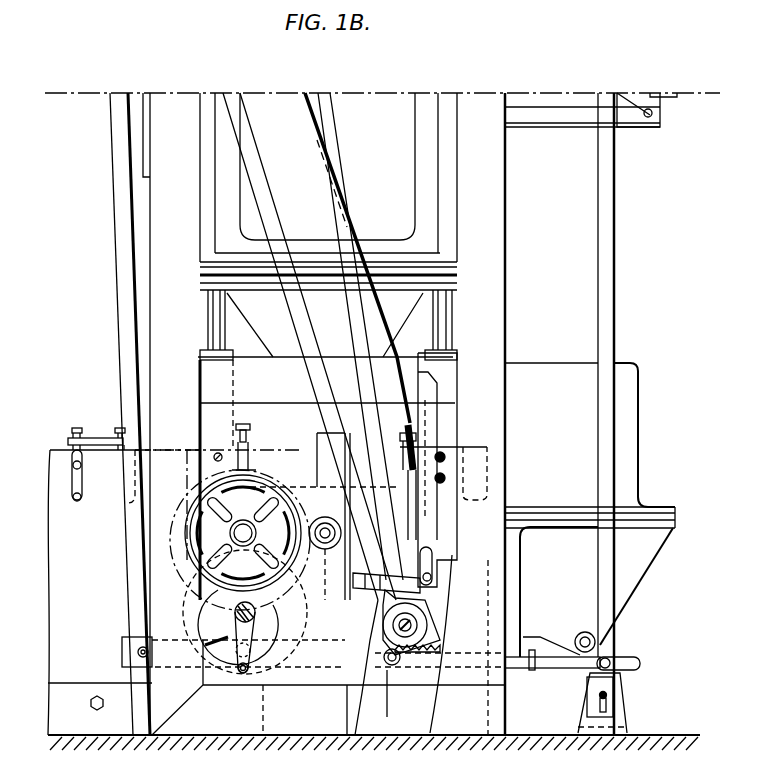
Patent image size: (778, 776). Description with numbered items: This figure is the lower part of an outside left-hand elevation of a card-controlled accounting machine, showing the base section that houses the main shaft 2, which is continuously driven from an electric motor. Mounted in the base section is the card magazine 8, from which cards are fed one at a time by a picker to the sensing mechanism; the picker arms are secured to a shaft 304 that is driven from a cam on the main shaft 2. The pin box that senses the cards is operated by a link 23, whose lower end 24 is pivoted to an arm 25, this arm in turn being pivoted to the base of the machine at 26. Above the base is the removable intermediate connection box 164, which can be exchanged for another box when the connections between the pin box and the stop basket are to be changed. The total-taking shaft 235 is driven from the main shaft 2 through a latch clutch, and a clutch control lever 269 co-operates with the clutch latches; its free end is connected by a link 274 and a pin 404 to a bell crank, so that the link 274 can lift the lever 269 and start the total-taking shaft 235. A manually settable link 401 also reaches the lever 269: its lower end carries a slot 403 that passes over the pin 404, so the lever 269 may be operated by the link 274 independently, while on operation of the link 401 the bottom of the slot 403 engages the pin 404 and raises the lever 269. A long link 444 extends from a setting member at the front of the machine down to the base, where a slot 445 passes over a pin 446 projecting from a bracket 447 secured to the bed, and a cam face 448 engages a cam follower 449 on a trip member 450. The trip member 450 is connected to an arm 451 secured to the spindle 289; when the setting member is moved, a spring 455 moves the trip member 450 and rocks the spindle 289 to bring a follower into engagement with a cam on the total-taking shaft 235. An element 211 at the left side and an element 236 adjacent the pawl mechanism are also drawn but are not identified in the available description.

The side frame member 211 is at (122, 242).
The intermediate connection box 164 is at (328, 191).
The manually settable link 401 is at (378, 333).
The long link 444 is at (606, 194).
The card magazine 8 is at (552, 375).
The link 274 is at (432, 416).
The slot 403 is at (437, 558).
The pin 404 is at (437, 583).
The clutch control lever 269 is at (357, 582).
The total-taking shaft 235 is at (430, 620).
The pawl pivot 236 is at (428, 627).
The shaft 304 is at (597, 640).
The cam follower 449 is at (612, 660).
The trip member 450 is at (548, 670).
The cam face 448 is at (583, 677).
The pin 446 is at (613, 692).
The slot 445 is at (613, 706).
The bracket 447 is at (612, 727).
The spring 455 is at (437, 657).
The main shaft 2 is at (236, 612).
The pivot on base 26 is at (163, 667).
The arm 25 is at (240, 591).
The lower end of link 24 is at (337, 672).
The link 23 is at (385, 637).
The spindle 289 is at (396, 665).
The arm 451 is at (384, 704).